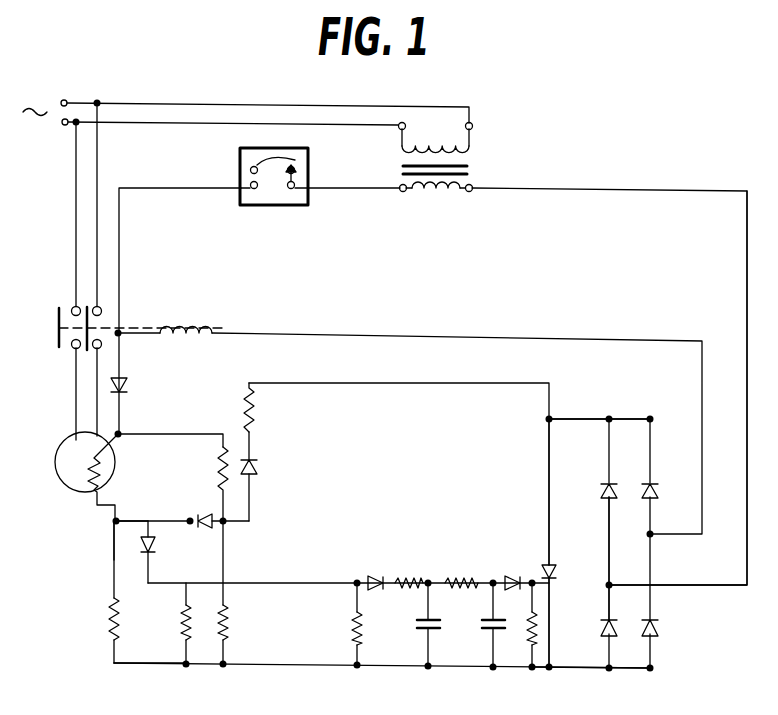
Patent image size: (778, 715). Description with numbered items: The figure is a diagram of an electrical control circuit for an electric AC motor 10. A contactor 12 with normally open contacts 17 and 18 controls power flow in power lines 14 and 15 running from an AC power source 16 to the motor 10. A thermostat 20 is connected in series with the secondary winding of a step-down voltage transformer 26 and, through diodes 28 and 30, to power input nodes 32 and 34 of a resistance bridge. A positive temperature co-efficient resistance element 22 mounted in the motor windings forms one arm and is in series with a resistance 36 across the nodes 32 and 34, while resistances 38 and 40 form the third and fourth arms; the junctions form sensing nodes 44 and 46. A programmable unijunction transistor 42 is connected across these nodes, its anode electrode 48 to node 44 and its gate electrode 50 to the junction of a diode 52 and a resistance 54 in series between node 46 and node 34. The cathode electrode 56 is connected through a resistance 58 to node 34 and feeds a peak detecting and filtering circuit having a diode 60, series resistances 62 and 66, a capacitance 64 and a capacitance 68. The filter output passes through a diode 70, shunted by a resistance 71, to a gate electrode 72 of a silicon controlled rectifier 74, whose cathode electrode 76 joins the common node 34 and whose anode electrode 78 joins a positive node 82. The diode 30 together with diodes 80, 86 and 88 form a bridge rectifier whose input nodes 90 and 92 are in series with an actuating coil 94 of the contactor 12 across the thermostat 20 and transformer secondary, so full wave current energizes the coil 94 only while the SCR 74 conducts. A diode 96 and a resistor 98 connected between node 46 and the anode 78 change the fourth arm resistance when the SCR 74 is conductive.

The electric alternating current motor 10 is at (57, 478).
The contactor 12 is at (128, 312).
The power line 14 is at (77, 207).
The power line 15 is at (100, 152).
The AC power source 16 is at (58, 103).
The normally open contact 17 is at (63, 308).
The normally open contact 18 is at (97, 335).
The thermostat 20 is at (278, 208).
The positive temperature co-efficient resistance element 22 is at (83, 490).
The step-down voltage transformer 26 is at (470, 174).
The diode 28 is at (128, 388).
The diode 30 is at (624, 638).
The power input node 32 is at (171, 434).
The power input node 34 is at (137, 664).
The resistance 36 is at (111, 617).
The resistance 38 is at (231, 452).
The resistance 40 is at (226, 618).
The programmable unijunction transistor 42 is at (147, 534).
The sensing node 44 is at (114, 560).
The sensing node 46 is at (224, 568).
The anode electrode 48 is at (128, 519).
The gate electrode 50 is at (189, 516).
The diode 52 is at (222, 528).
The resistance 54 is at (197, 633).
The cathode electrode 56 is at (148, 585).
The resistance 58 is at (355, 628).
The diode 60 is at (377, 574).
The resistance 62 is at (405, 578).
The capacitance 64 is at (432, 630).
The resistance 66 is at (458, 578).
The capacitance 68 is at (503, 633).
The diode 70 is at (511, 576).
The resistance 71 is at (530, 626).
The gate electrode 72 is at (553, 586).
The silicon controlled rectifier 74 is at (556, 571).
The cathode electrode 76 is at (552, 627).
The anode electrode 78 is at (552, 500).
The diode 80 is at (600, 485).
The positive node 82 is at (630, 417).
The diode 86 is at (660, 628).
The diode 88 is at (660, 490).
The input node 90 is at (612, 575).
The input node 92 is at (650, 568).
The actuating coil 94 is at (202, 322).
The diode 96 is at (257, 465).
The resistor 98 is at (253, 415).